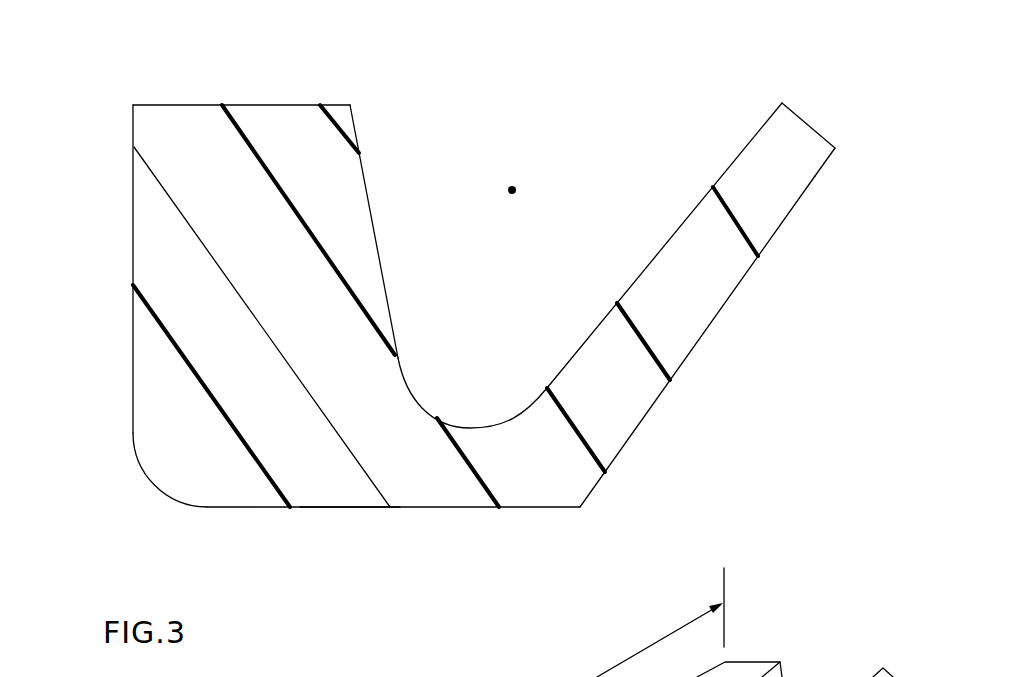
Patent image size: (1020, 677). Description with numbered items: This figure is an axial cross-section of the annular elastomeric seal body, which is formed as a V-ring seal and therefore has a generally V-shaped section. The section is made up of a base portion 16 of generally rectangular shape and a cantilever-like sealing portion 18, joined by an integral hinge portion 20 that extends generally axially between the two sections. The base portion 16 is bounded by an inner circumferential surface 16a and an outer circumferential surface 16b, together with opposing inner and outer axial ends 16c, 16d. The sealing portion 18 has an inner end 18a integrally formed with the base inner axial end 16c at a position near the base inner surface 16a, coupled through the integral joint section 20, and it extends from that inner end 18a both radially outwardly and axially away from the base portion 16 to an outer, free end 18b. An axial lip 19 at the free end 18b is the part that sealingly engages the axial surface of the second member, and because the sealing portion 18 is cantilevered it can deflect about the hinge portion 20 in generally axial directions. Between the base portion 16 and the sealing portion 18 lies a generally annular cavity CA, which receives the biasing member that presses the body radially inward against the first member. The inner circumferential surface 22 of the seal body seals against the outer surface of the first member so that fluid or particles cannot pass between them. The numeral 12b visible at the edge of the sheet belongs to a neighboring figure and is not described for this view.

The base portion 16 is at (130, 327).
The inner circumferential surface 16a is at (253, 508).
The outer circumferential surface 16b is at (257, 104).
The inner axial end 16c is at (380, 258).
The outer axial end 16d is at (133, 227).
The sealing portion 18 is at (724, 326).
The inner end 18a is at (557, 463).
The outer free end 18b is at (793, 128).
The axial lip 19 is at (833, 152).
The hinge portion 20 is at (474, 440).
The inner circumferential surface 22 is at (328, 508).
The annular cavity CA is at (512, 190).
The portion of adjacent figure 12b is at (765, 663).